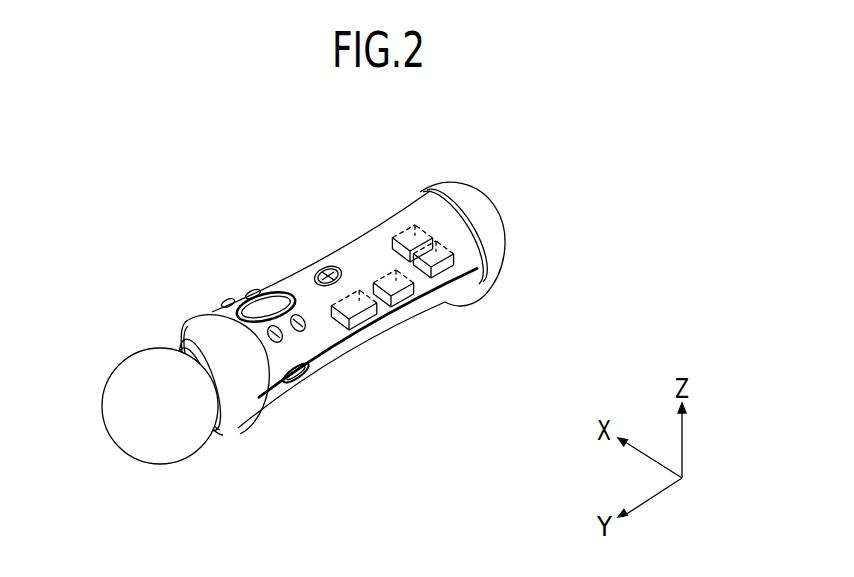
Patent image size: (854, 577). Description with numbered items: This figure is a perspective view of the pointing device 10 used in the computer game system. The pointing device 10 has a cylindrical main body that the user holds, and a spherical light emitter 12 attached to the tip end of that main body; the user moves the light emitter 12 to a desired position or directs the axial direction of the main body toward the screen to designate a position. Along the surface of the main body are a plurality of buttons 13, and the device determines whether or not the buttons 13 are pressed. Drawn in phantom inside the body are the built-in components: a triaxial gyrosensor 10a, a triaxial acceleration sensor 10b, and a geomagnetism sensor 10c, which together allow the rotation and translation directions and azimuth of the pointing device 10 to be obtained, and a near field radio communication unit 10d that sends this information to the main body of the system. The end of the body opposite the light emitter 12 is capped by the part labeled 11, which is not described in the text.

The pointing device 10 is at (420, 415).
The triaxial gyrosensor 10a is at (357, 312).
The triaxial acceleration sensor 10b is at (392, 292).
The geomagnetism sensor 10c is at (437, 253).
The near field radio communication unit 10d is at (412, 240).
The end cap 11 is at (462, 303).
The light emitter 12 is at (165, 455).
The buttons 13 is at (223, 301).